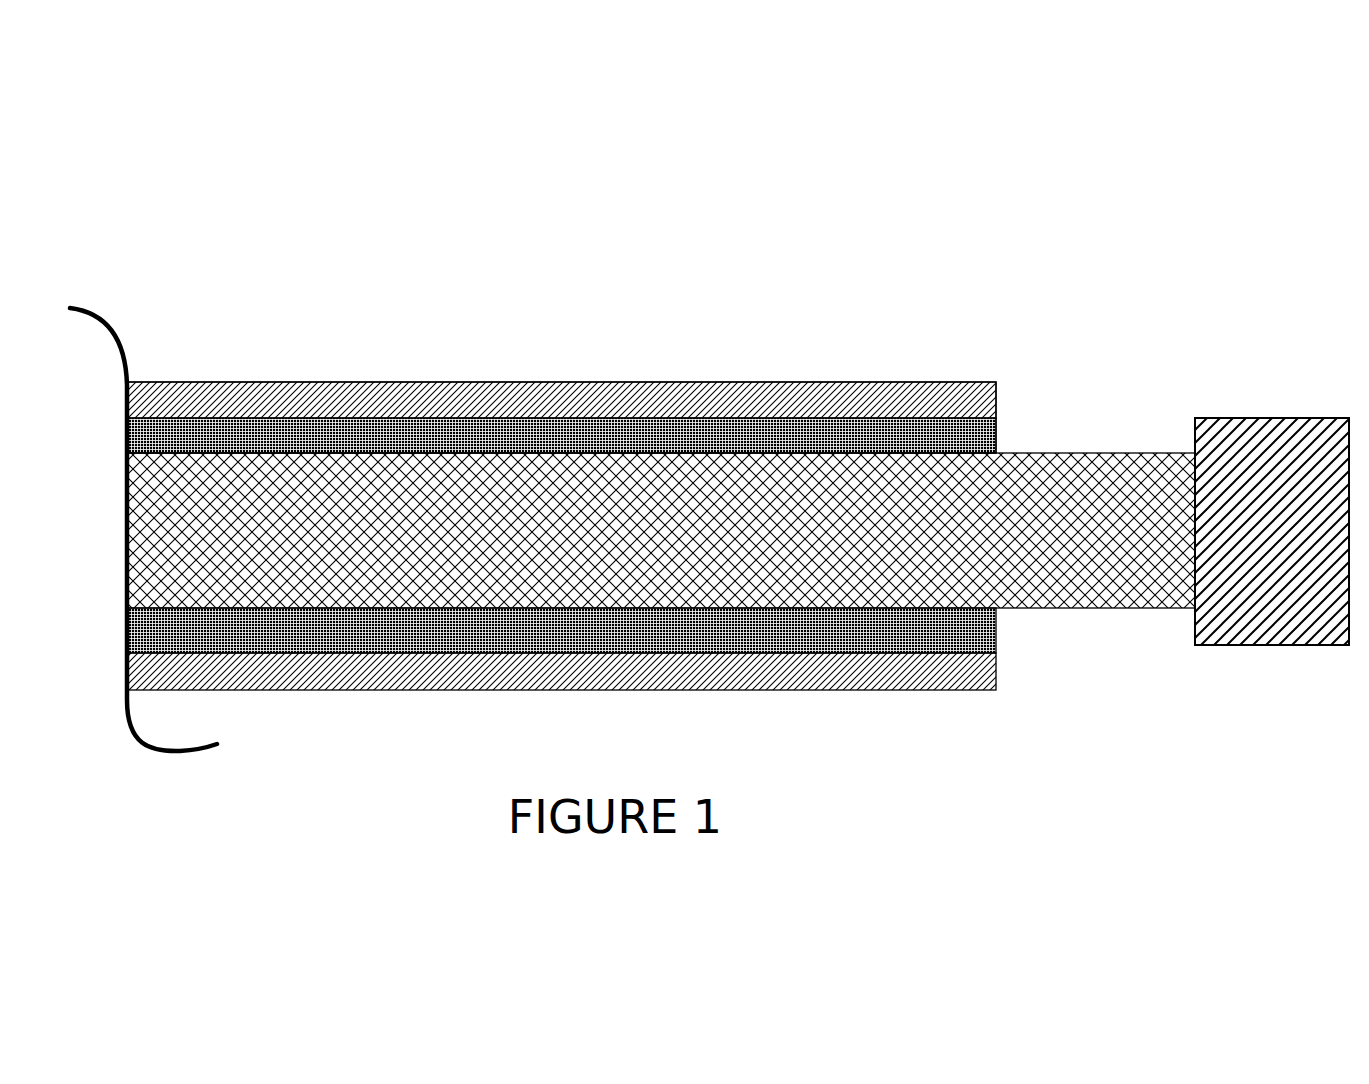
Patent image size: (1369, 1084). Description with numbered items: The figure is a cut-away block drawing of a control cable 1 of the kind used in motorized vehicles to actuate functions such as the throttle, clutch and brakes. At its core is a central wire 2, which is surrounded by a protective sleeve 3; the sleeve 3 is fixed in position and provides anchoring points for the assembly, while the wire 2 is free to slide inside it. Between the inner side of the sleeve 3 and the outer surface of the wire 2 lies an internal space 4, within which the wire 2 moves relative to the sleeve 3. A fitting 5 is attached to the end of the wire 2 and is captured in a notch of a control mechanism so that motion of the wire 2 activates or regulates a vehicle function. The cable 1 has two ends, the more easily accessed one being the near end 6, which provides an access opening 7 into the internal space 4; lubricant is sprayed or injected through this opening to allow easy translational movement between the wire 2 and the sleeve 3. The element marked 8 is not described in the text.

The control cable 1 is at (709, 430).
The central wire 2 is at (470, 508).
The protective sleeve 3 is at (598, 382).
The internal space 4 is at (985, 635).
The fitting 5 is at (1213, 435).
The near end 6 is at (1024, 393).
The access opening 7 is at (950, 437).
The casing / pouch 8 is at (86, 218).